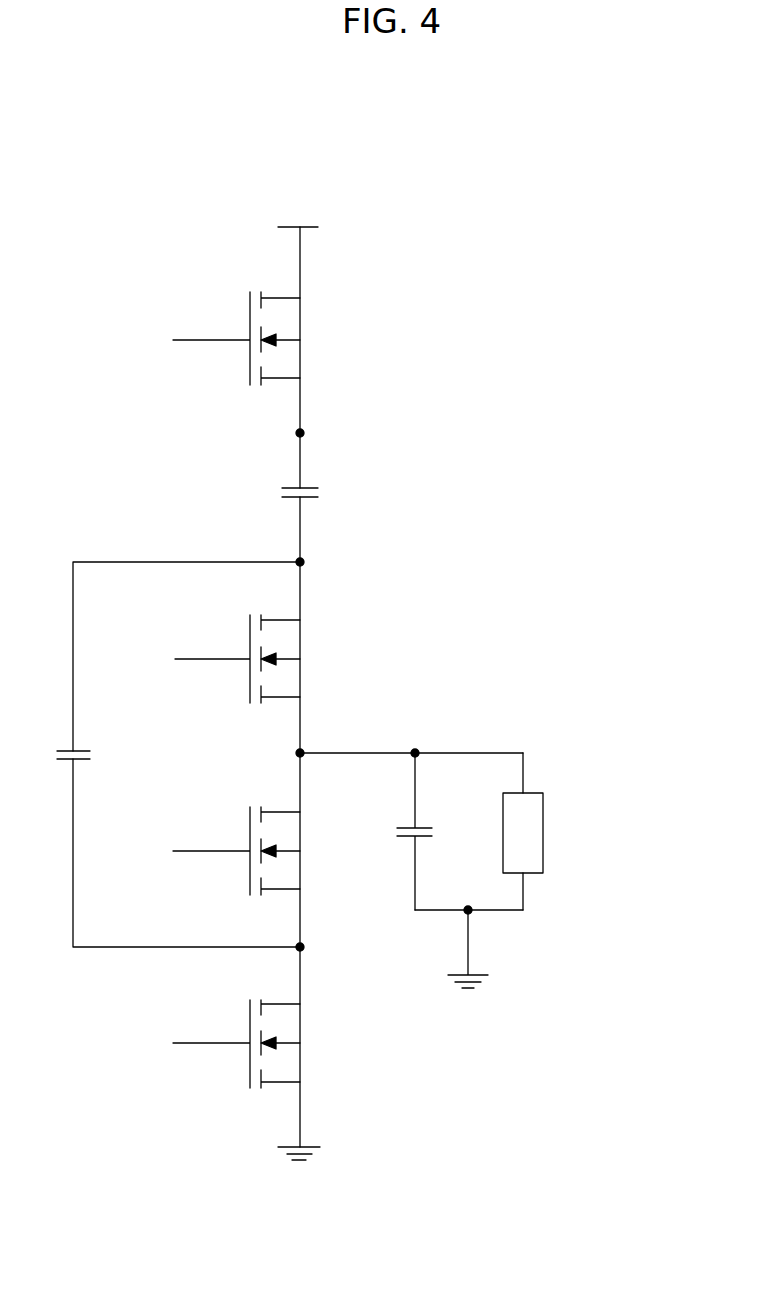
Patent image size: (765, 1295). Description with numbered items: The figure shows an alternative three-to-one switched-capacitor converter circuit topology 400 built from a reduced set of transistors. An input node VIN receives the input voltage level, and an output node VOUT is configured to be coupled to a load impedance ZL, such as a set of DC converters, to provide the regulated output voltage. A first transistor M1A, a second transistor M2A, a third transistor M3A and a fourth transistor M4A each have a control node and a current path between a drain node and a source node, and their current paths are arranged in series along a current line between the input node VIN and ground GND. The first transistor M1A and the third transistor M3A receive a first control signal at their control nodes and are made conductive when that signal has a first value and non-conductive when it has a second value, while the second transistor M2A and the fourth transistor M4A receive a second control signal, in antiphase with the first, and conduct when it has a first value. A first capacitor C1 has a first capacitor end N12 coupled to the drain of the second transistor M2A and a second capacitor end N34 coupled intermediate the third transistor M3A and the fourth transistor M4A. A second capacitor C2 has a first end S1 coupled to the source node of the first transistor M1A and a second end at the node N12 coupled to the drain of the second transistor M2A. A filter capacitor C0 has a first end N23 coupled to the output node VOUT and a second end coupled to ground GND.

The SCC converter circuit topology 400 is at (508, 425).
The first transistor M1A is at (290, 323).
The second transistor M2A is at (290, 643).
The third transistor M3A is at (290, 834).
The fourth transistor M4A is at (290, 1027).
The first capacitor C1 is at (90, 757).
The second capacitor C2 is at (318, 493).
The filter capacitor C0 is at (428, 826).
The load impedance ZL is at (524, 828).
The first capacitor end of the second capacitor S1 is at (296, 433).
The first capacitor end N12 is at (304, 562).
The first capacitor end of the filter capacitor N23 is at (296, 754).
The second capacitor end N34 is at (304, 947).
The input node VIN is at (297, 201).
The output node VOUT is at (411, 732).
The ground GND is at (325, 1166).